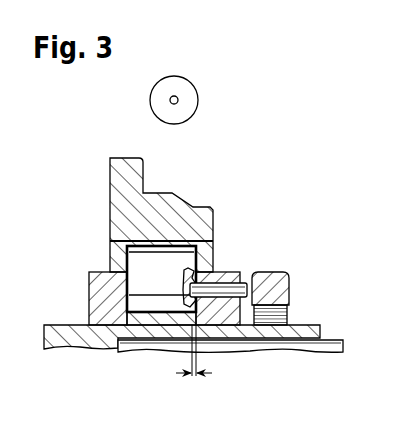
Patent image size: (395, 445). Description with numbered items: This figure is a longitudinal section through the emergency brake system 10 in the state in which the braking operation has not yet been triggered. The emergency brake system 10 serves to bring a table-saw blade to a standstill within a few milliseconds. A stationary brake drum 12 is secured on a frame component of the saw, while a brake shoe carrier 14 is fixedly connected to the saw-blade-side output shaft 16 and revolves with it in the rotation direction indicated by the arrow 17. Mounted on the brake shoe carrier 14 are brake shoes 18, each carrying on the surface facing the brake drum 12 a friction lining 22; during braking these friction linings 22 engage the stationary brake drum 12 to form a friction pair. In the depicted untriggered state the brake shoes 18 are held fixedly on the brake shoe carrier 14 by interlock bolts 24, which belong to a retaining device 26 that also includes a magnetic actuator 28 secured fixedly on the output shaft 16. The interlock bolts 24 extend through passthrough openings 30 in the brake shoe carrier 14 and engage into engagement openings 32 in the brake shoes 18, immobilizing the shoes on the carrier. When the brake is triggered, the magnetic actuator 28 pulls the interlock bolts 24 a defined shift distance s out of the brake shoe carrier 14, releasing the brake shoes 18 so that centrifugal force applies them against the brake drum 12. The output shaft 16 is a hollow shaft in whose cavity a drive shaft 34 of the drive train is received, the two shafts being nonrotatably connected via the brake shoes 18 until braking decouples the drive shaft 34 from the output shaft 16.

The emergency brake system 10 is at (266, 141).
The brake drum 12 is at (118, 176).
The brake shoe carrier 14 is at (89, 292).
The output shaft 16 is at (73, 338).
The arrow 17 is at (176, 76).
The brake shoes 18 is at (137, 268).
The friction lining 22 is at (140, 248).
The interlock bolts 24 is at (212, 300).
The retaining device 26 is at (265, 251).
The magnetic actuator 28 is at (272, 290).
The passthrough openings 30 is at (240, 297).
The engagement openings 32 is at (155, 300).
The drive shaft 34 is at (313, 345).
The shift distance s is at (193, 380).